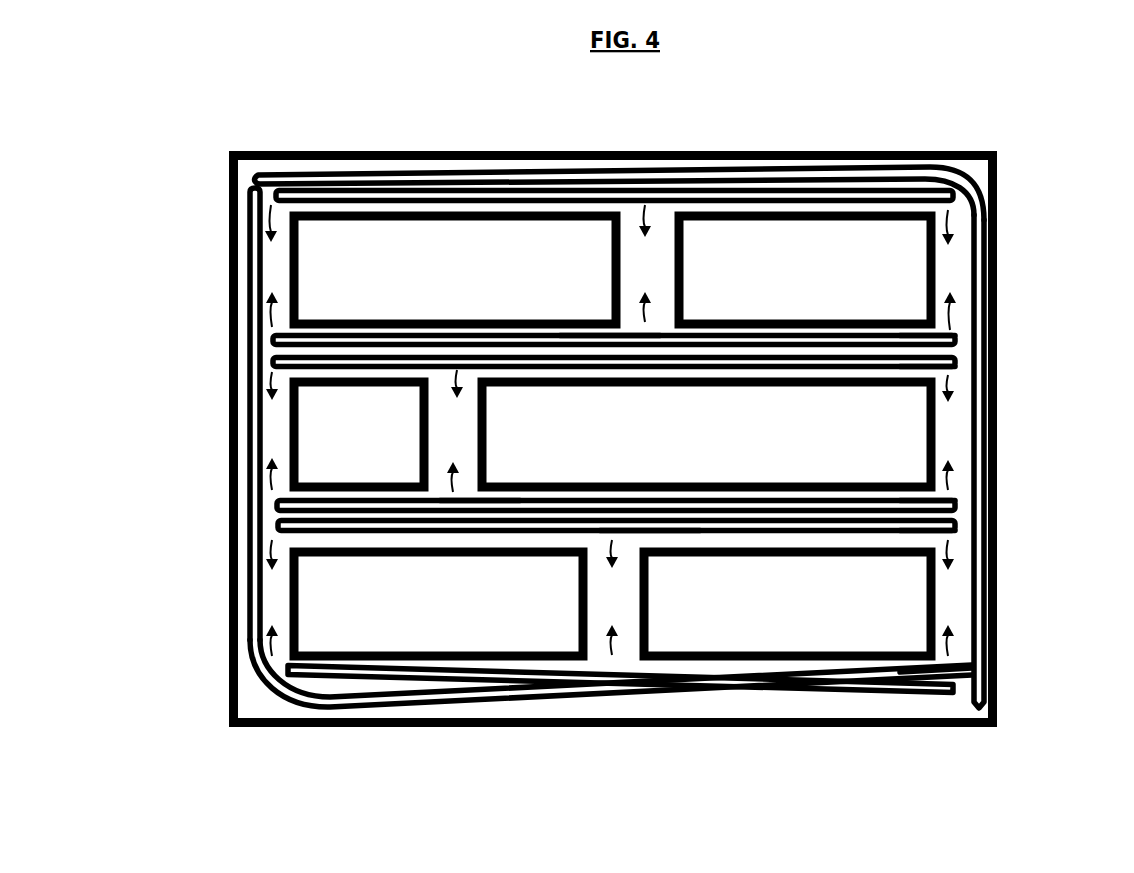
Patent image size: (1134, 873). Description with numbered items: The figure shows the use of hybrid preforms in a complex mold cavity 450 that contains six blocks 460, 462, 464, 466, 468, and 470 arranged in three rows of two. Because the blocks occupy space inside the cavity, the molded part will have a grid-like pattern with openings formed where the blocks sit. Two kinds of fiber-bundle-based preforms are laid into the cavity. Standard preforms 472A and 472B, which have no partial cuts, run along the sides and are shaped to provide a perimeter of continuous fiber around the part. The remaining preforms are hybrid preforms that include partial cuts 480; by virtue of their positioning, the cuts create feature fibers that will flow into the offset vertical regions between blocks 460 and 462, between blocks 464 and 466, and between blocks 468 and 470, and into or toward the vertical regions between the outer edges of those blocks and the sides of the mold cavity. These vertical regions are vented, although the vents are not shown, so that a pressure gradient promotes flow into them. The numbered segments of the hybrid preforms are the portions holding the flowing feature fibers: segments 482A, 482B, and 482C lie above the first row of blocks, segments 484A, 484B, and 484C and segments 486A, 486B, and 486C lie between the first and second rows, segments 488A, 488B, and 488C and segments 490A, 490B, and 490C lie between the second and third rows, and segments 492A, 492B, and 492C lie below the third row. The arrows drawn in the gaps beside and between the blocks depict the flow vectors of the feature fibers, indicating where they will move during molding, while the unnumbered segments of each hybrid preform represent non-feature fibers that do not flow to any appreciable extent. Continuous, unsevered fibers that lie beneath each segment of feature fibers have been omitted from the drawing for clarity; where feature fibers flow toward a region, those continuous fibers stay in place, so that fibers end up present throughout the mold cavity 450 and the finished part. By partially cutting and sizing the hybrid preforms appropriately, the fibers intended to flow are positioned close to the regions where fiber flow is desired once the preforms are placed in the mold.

The complex mold cavity 450 is at (442, 151).
The block 460 is at (455, 270).
The block 462 is at (805, 270).
The block 464 is at (359, 434).
The block 466 is at (706, 434).
The block 468 is at (438, 604).
The block 470 is at (787, 604).
The standard preform 472A is at (977, 282).
The standard preform 472B is at (255, 290).
The partial cuts 480 is at (550, 192).
The segment 482A is at (322, 193).
The segment 482B is at (652, 193).
The segment 482C is at (890, 198).
The segment 484A is at (272, 338).
The segment 484B is at (615, 337).
The segment 484C is at (955, 338).
The segment 486A is at (272, 366).
The segment 486B is at (468, 362).
The segment 486C is at (957, 368).
The segment 488A is at (277, 508).
The segment 488B is at (470, 500).
The segment 488C is at (955, 503).
The segment 490A is at (278, 527).
The segment 490B is at (650, 534).
The segment 490C is at (957, 531).
The segment 492A is at (322, 673).
The segment 492B is at (625, 668).
The segment 492C is at (985, 672).